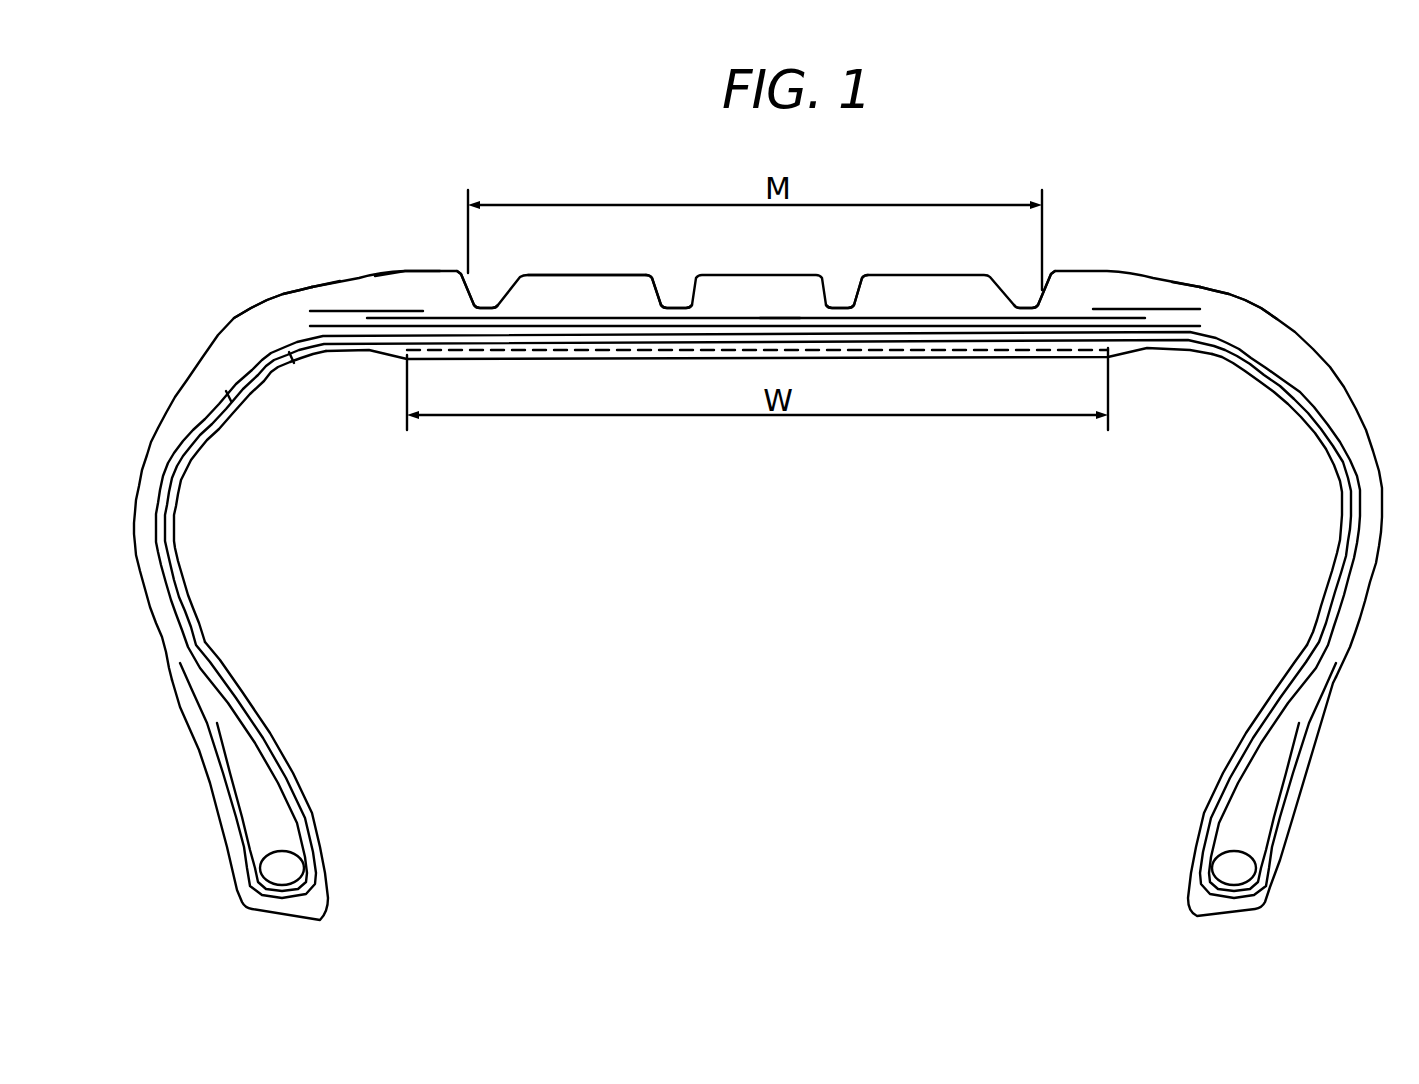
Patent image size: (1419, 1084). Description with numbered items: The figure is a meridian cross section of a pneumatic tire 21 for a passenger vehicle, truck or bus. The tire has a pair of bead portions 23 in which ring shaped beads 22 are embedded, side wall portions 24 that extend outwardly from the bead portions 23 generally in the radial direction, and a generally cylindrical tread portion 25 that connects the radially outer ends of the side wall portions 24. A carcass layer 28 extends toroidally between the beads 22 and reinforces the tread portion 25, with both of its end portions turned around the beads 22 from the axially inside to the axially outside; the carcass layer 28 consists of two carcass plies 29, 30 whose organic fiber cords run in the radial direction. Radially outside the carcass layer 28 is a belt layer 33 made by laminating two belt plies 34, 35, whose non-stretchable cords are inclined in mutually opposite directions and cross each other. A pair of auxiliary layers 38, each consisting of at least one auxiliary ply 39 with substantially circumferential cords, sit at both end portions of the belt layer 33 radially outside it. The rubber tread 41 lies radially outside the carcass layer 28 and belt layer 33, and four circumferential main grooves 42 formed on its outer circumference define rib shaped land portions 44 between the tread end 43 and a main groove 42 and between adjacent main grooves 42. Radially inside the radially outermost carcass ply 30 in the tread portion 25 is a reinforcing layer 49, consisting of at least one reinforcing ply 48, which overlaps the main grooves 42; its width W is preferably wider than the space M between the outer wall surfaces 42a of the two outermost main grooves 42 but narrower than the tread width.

The pneumatic tire 21 is at (889, 264).
The bead 22 is at (297, 872).
The bead portion 23 is at (320, 803).
The side wall portion 24 is at (195, 573).
The tread portion 25 is at (391, 268).
The carcass layer 28 is at (186, 490).
The carcass ply 29 is at (229, 396).
The carcass ply 30 is at (291, 357).
The belt layer 33 is at (765, 308).
The belt ply 34 is at (703, 320).
The belt ply 35 is at (782, 317).
The auxiliary layer 38 is at (357, 311).
The auxiliary ply 39 is at (312, 310).
The tread 41 is at (580, 292).
The main groove 42 is at (500, 307).
The outer wall surface 42a is at (472, 295).
The tread end 43 is at (257, 313).
The land portion 44 is at (623, 298).
The reinforcing ply 48 is at (813, 350).
The reinforcing layer 49 is at (577, 362).